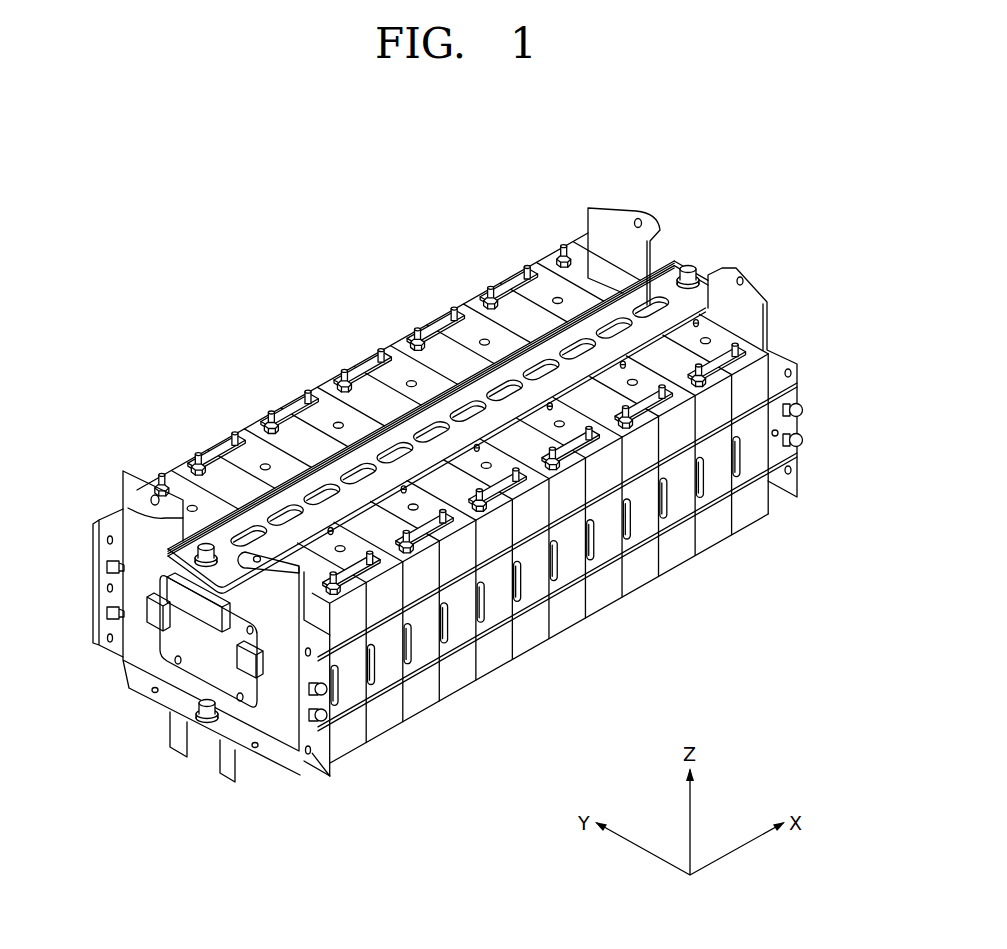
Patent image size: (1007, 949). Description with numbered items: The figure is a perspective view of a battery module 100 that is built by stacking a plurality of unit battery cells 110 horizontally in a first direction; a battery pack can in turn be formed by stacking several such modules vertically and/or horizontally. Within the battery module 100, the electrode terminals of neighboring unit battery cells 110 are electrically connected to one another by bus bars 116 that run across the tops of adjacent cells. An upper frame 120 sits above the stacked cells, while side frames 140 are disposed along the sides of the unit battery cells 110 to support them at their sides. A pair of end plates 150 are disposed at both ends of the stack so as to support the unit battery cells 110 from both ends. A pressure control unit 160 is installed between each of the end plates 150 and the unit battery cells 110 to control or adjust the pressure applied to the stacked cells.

The battery module 100 is at (198, 406).
The unit battery cells 110 is at (672, 555).
The bus bars 116 is at (436, 332).
The upper frame 120 is at (677, 270).
The side frames 140 is at (710, 490).
The end plates 150 is at (184, 684).
The pressure control unit 160 is at (788, 448).